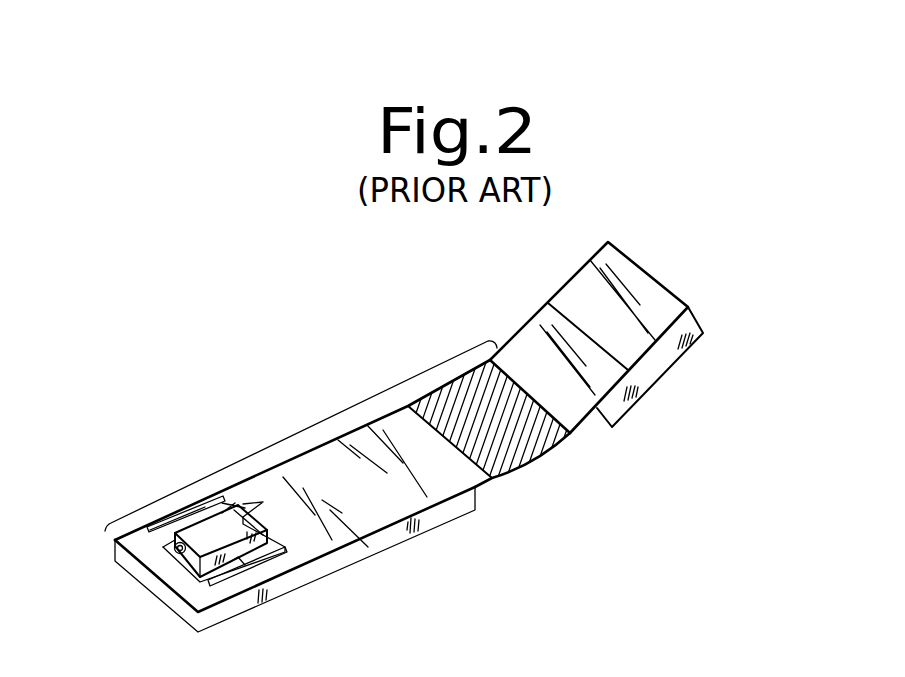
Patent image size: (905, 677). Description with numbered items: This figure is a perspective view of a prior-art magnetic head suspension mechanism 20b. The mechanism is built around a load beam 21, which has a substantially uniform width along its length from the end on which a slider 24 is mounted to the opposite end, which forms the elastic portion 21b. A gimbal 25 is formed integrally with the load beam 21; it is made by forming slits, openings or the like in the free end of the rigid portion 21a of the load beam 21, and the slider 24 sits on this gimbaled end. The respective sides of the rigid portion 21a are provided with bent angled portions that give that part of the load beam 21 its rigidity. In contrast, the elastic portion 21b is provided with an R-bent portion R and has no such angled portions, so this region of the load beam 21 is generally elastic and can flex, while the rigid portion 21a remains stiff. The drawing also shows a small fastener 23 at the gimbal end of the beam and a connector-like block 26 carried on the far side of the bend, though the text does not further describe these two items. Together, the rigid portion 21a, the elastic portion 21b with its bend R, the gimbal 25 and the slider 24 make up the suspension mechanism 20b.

The magnetic head suspension mechanism 20b is at (236, 389).
The load beam 21 is at (316, 421).
The rigid portion 21a is at (378, 542).
The elastic portion 21b is at (447, 388).
The screw 23 is at (180, 545).
The slider 24 is at (212, 517).
The gimbal 25 is at (234, 570).
The end block / connector 26 is at (670, 358).
The R-bent portion R is at (527, 450).